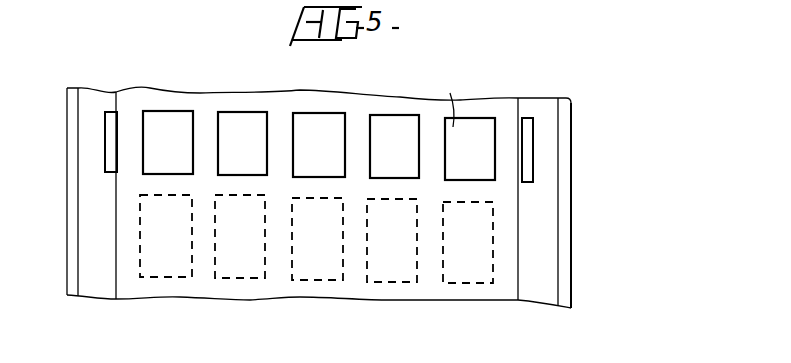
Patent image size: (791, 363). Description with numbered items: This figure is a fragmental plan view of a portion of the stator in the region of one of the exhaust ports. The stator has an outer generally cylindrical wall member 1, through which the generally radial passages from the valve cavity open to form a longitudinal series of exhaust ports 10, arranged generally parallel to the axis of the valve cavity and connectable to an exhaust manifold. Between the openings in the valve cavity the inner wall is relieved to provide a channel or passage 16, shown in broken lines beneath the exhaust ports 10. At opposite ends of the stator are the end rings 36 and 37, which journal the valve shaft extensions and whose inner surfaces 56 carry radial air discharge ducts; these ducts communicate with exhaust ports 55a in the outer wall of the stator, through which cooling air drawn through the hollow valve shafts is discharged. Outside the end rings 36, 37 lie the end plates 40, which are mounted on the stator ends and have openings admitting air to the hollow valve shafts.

The outer generally cylindrical wall member 1 is at (337, 97).
The exhaust ports 10 is at (170, 123).
The channel or passage 16 is at (233, 270).
The end ring 36 is at (88, 98).
The end ring 37 is at (543, 172).
The end plates 40 is at (70, 97).
The exhaust ports 55a is at (112, 157).
The inner surfaces 56 is at (112, 98).